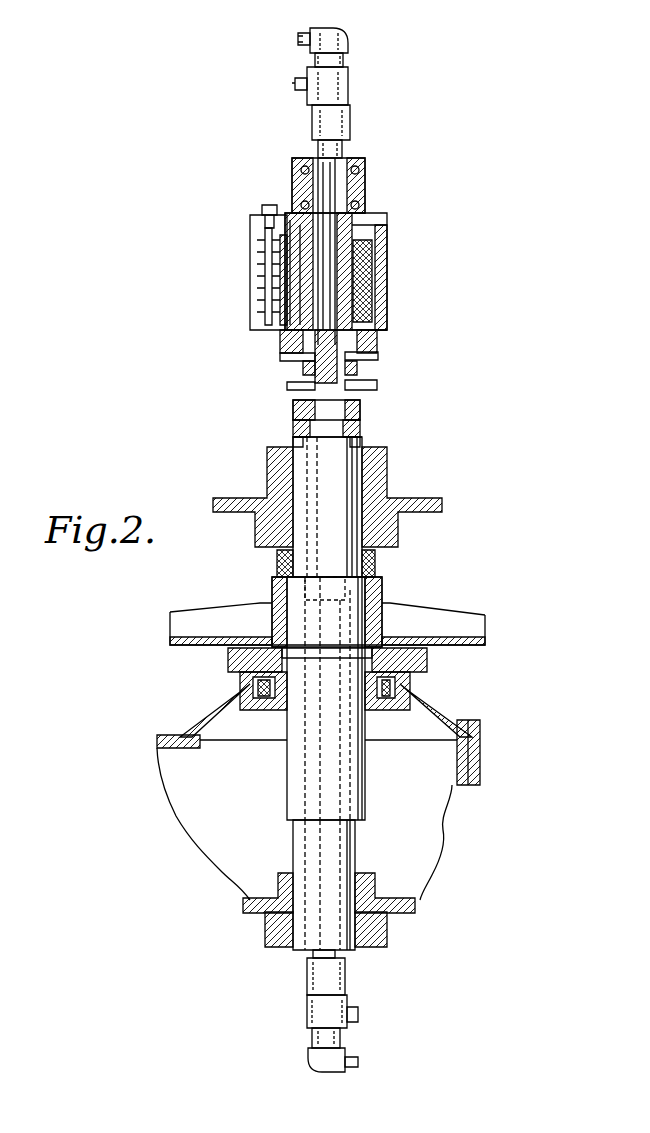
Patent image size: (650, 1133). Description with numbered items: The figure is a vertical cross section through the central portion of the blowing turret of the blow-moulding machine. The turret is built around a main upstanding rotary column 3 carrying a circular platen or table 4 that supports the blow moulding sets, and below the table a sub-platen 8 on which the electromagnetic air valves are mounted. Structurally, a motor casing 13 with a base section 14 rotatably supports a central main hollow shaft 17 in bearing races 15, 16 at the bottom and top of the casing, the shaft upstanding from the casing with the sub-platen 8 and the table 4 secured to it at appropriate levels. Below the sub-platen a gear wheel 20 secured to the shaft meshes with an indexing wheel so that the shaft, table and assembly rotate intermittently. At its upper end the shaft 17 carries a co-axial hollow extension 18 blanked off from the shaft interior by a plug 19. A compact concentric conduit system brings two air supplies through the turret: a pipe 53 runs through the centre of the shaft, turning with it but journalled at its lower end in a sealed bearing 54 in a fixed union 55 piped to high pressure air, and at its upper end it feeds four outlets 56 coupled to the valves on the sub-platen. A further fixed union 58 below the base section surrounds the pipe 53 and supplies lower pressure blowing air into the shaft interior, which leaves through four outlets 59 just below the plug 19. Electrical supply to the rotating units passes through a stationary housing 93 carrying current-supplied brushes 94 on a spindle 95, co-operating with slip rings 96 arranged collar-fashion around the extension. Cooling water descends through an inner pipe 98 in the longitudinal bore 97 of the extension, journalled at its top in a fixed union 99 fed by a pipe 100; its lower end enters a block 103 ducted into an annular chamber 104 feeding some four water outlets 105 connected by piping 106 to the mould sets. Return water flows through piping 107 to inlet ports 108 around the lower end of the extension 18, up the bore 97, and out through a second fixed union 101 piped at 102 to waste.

The main upstanding rotary column 3 is at (420, 596).
The circular platen or table 4 is at (240, 498).
The sub-platen 8 is at (450, 622).
The motor casing 13 is at (482, 760).
The base section 14 is at (410, 913).
The bearing race 15 is at (268, 921).
The bearing race 16 is at (246, 684).
The central main hollow shaft 17 is at (349, 494).
The co-axial hollow extension 18 is at (352, 229).
The plug 19 is at (330, 440).
The gear wheel 20 is at (428, 660).
The pipe 53 is at (290, 762).
The sealed bearing 54 is at (312, 1040).
The fixed union 55 is at (308, 1060).
The outlets 56 is at (278, 562).
The fixed union 58 is at (348, 1000).
The outlets 59 is at (300, 440).
The stationary housing 93 is at (388, 283).
The current-supplied brushes 94 is at (262, 257).
The spindle 95 is at (263, 226).
The slip rings 96 is at (366, 290).
The longitudinal bore 97 is at (338, 259).
The inner pipe 98 is at (336, 185).
The fixed union 99 is at (349, 40).
The pipe 100 is at (300, 36).
The second fixed union 101 is at (349, 86).
The piping to waste 102 is at (295, 84).
The block 103 is at (350, 345).
The annular chamber 104 is at (300, 345).
The water outlets 105 is at (301, 367).
The piping 106 is at (283, 356).
The piping 107 is at (291, 390).
The inlet ports 108 is at (300, 428).